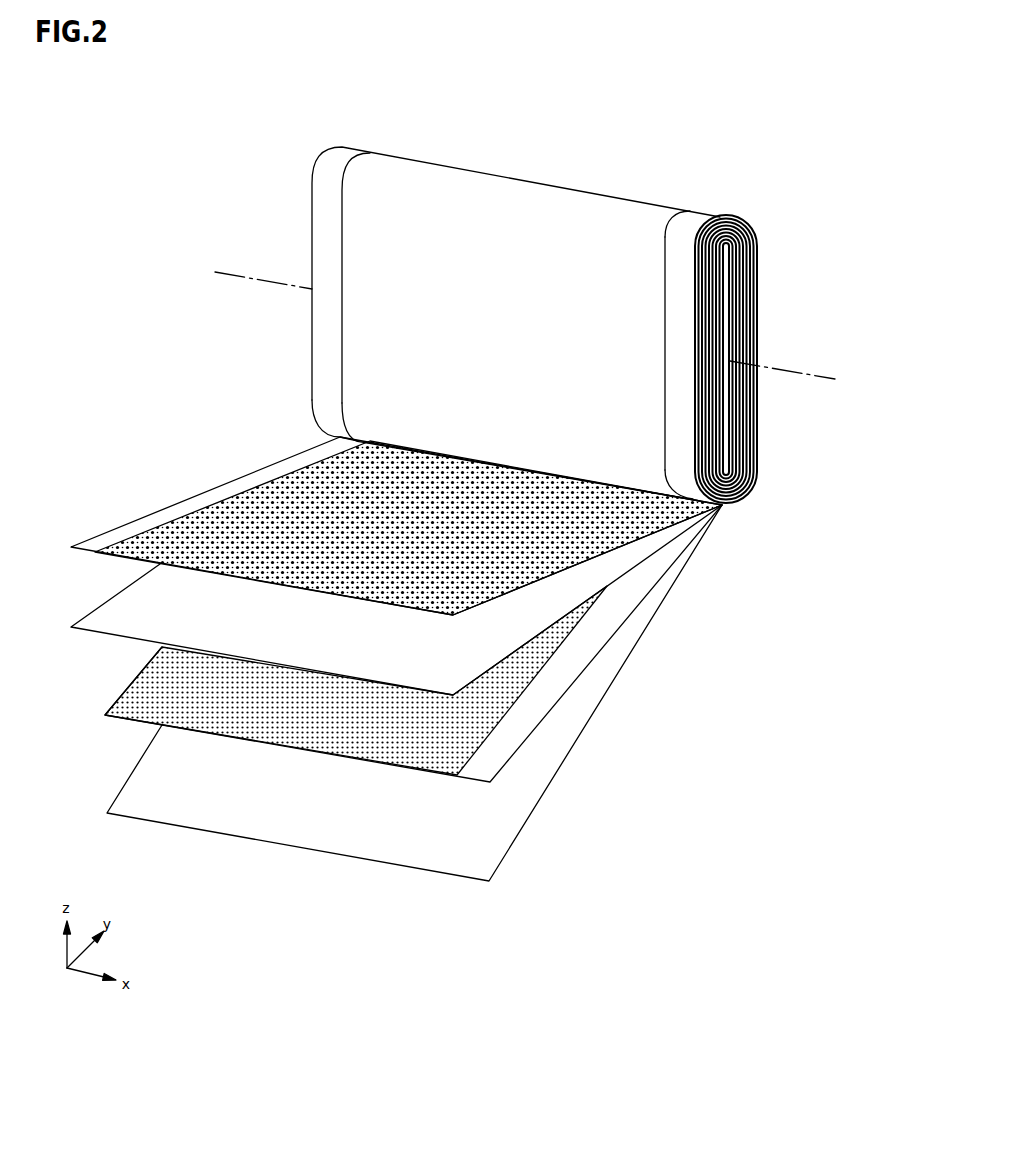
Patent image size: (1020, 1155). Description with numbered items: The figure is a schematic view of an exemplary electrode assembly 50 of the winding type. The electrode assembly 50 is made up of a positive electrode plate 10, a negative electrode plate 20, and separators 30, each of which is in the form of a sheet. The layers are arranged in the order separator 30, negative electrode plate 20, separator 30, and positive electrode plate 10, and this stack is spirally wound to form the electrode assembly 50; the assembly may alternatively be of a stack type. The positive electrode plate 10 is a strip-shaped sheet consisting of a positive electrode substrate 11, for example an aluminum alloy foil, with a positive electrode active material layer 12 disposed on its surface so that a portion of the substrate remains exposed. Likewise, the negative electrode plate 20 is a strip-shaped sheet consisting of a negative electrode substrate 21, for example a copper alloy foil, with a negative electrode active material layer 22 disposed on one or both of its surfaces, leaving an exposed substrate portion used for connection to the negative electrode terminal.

The positive electrode plate 10 is at (393, 526).
The positive electrode substrate 11 is at (187, 507).
The positive electrode active material layer 12 is at (250, 517).
The negative electrode plate 20 is at (429, 643).
The negative electrode substrate 21 is at (505, 738).
The negative electrode active material layer 22 is at (487, 712).
The separator 30 is at (121, 638).
The electrode assembly 50 is at (528, 193).